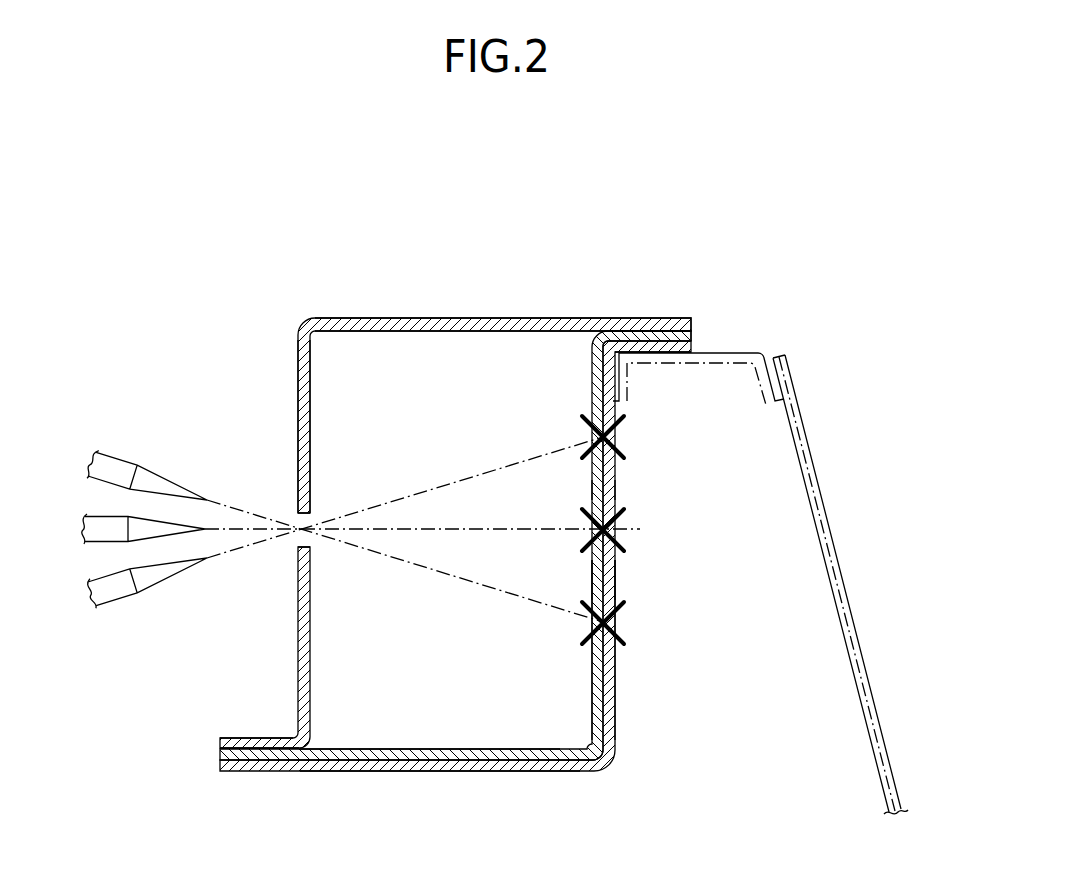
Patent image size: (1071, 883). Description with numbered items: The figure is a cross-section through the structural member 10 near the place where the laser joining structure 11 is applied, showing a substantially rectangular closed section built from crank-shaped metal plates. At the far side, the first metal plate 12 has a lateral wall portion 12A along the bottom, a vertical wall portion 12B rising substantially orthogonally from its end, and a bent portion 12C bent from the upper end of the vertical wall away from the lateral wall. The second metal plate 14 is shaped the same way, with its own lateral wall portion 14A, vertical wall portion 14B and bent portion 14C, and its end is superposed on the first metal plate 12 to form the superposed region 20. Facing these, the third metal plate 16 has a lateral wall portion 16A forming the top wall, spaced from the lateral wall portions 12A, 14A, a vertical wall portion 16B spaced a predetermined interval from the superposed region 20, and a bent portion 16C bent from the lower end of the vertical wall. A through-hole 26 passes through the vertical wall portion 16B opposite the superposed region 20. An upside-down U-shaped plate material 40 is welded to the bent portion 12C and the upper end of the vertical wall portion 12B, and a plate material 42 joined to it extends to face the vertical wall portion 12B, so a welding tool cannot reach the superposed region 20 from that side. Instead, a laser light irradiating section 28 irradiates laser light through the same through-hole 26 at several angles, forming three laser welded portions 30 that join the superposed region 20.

The structural member 10 is at (433, 241).
The laser joining structure 11 is at (636, 490).
The first metal plate 12 is at (617, 711).
The lateral wall portion 12A is at (396, 772).
The vertical wall portion 12B is at (616, 662).
The bent portion 12C is at (669, 353).
The second metal plate 14 is at (471, 748).
The lateral wall portion 14A is at (379, 748).
The vertical wall portion 14B is at (592, 664).
The bent portion 14C is at (689, 335).
The third metal plate 16 is at (297, 401).
The lateral wall portion 16A is at (521, 318).
The vertical wall portion 16B is at (297, 436).
The bent portion 16C is at (244, 738).
The superposed region 20 is at (617, 578).
The through-hole 26 is at (313, 521).
The laser light irradiating section 28 is at (125, 460).
The laser welded portion 30 is at (605, 437).
The plate material 40 is at (750, 366).
The plate material 42 is at (836, 612).